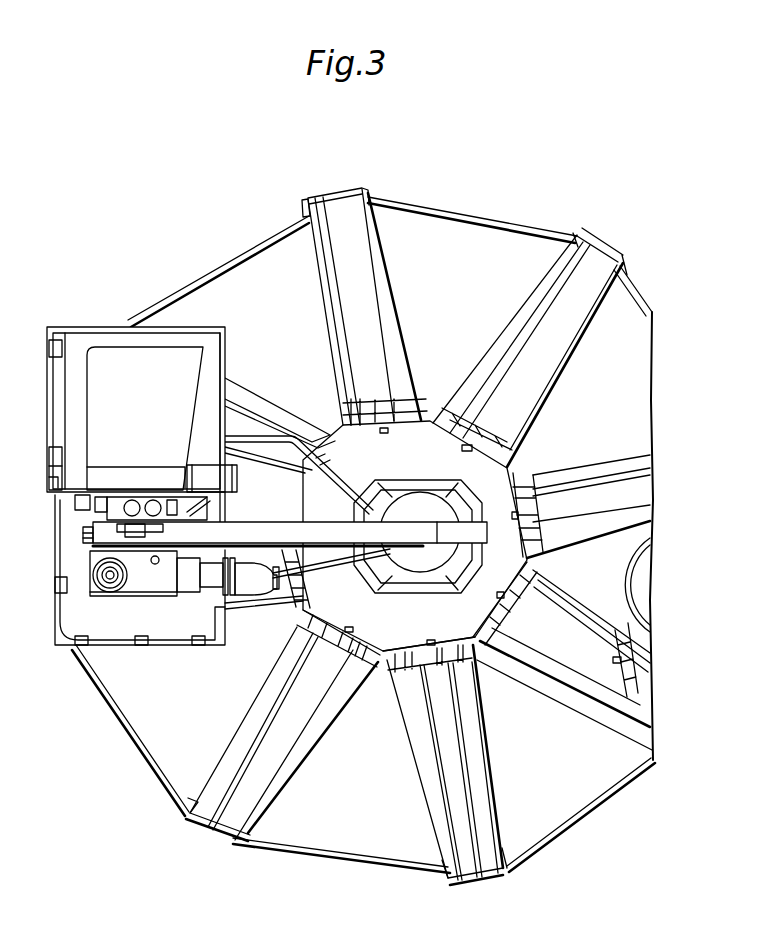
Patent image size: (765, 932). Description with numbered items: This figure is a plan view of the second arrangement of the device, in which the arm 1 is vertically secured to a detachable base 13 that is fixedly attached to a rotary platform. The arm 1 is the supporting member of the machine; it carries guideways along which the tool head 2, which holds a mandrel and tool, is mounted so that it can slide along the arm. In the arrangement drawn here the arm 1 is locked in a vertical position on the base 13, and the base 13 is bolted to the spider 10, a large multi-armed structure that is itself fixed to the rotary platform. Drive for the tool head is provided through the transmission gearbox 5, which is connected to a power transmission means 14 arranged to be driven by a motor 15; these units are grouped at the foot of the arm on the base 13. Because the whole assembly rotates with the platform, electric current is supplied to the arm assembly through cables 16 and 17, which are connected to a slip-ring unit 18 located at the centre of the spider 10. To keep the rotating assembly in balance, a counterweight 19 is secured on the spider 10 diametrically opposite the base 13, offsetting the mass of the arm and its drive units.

The arm 1 is at (114, 356).
The tool head 2 is at (83, 537).
The transmission gearbox 5 is at (101, 592).
The spider 10 is at (505, 483).
The base 13 is at (160, 632).
The power transmission means 14 is at (165, 578).
The motor 15 is at (250, 580).
The cable 16 is at (331, 567).
The cable 17 is at (345, 485).
The slip-ring unit 18 is at (412, 515).
The counterweight 19 is at (632, 580).